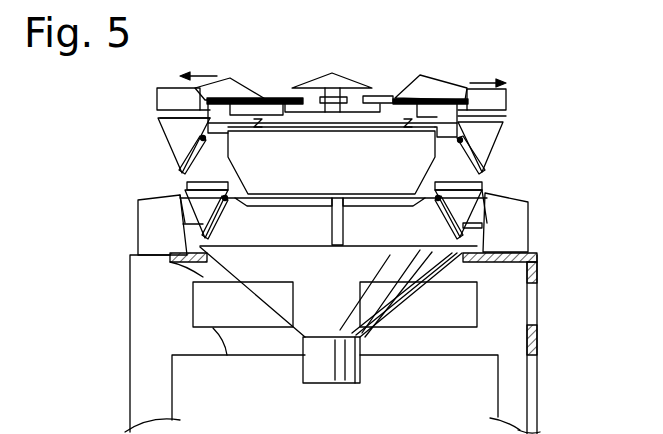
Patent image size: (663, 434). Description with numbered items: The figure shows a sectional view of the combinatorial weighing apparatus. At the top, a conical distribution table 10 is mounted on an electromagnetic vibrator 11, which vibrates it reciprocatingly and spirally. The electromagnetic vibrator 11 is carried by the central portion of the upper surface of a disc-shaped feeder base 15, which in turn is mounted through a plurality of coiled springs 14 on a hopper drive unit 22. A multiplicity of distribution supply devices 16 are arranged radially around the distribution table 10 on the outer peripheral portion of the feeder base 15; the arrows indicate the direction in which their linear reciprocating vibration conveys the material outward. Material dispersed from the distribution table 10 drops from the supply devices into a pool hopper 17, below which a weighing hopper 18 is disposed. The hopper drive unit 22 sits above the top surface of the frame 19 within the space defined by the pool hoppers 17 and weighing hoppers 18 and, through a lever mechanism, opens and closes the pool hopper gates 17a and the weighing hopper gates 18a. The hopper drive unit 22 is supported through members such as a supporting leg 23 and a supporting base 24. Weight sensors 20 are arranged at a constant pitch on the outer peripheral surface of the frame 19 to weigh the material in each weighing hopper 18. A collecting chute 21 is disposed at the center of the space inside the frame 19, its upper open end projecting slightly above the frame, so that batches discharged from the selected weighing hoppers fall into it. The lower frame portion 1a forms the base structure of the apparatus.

The frame 1a is at (142, 318).
The conical distribution table 10 is at (343, 87).
The electromagnetic vibrator 11 is at (330, 97).
The coiled springs 14 is at (263, 100).
The feeder base 15 is at (312, 117).
The distribution supply device 16 is at (245, 83).
The pool hopper 17 is at (170, 131).
The pool hopper gate 17a is at (173, 150).
The weighing hopper 18 is at (180, 195).
The weighing hopper gate 18a is at (215, 217).
The frame 19 is at (533, 347).
The weight sensor 20 is at (142, 245).
The collecting chute 21 is at (310, 318).
The hopper drive unit 22 is at (363, 140).
The supporting leg 23 is at (332, 213).
The supporting base 24 is at (353, 202).